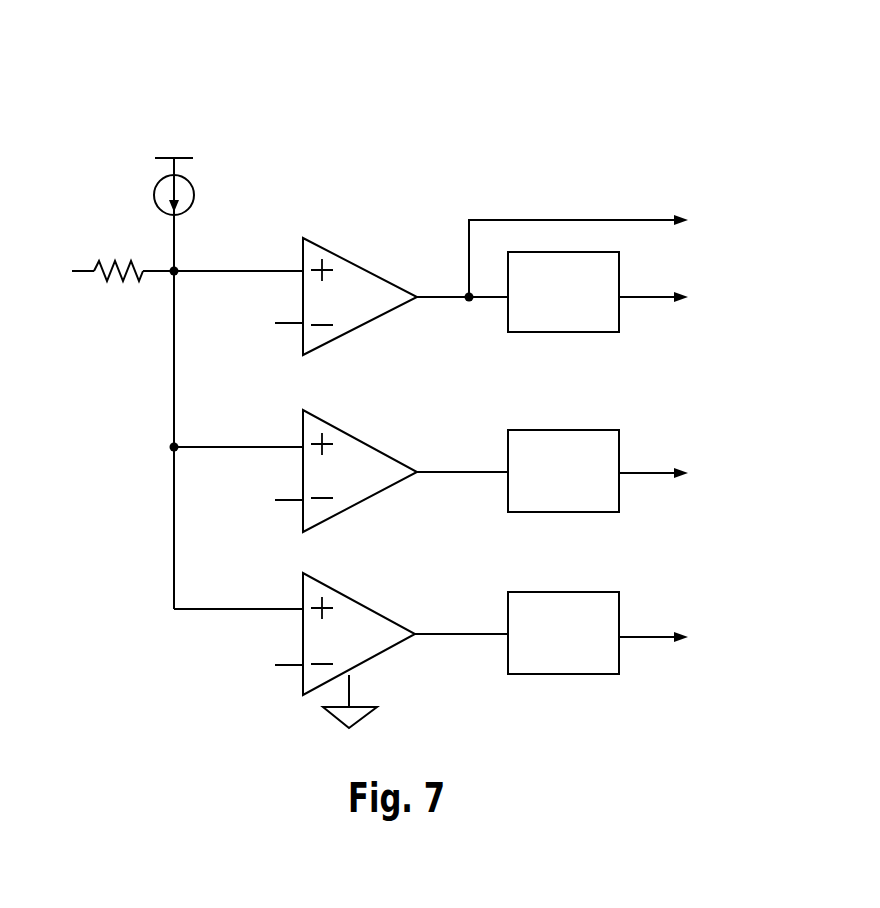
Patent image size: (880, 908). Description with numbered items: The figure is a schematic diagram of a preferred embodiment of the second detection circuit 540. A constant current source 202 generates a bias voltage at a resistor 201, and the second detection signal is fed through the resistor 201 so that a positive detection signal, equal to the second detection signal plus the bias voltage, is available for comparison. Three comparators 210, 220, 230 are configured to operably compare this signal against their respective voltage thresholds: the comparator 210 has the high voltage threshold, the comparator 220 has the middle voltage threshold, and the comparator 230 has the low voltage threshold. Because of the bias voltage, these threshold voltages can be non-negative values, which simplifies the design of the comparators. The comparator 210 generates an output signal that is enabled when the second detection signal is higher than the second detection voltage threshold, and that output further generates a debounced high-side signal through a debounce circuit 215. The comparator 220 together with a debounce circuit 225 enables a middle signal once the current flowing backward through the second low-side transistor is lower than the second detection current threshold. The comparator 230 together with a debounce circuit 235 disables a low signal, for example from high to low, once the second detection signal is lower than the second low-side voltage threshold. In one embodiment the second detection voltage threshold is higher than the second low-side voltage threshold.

The comparator circuit 540 is at (177, 57).
The resistor 201 is at (115, 287).
The constant current source 202 is at (193, 193).
The comparator 210 is at (367, 302).
The comparator 220 is at (367, 482).
The comparator 230 is at (366, 644).
The debounce circuit 215 is at (548, 320).
The debounce circuit 225 is at (548, 499).
The debounce circuit 235 is at (548, 660).